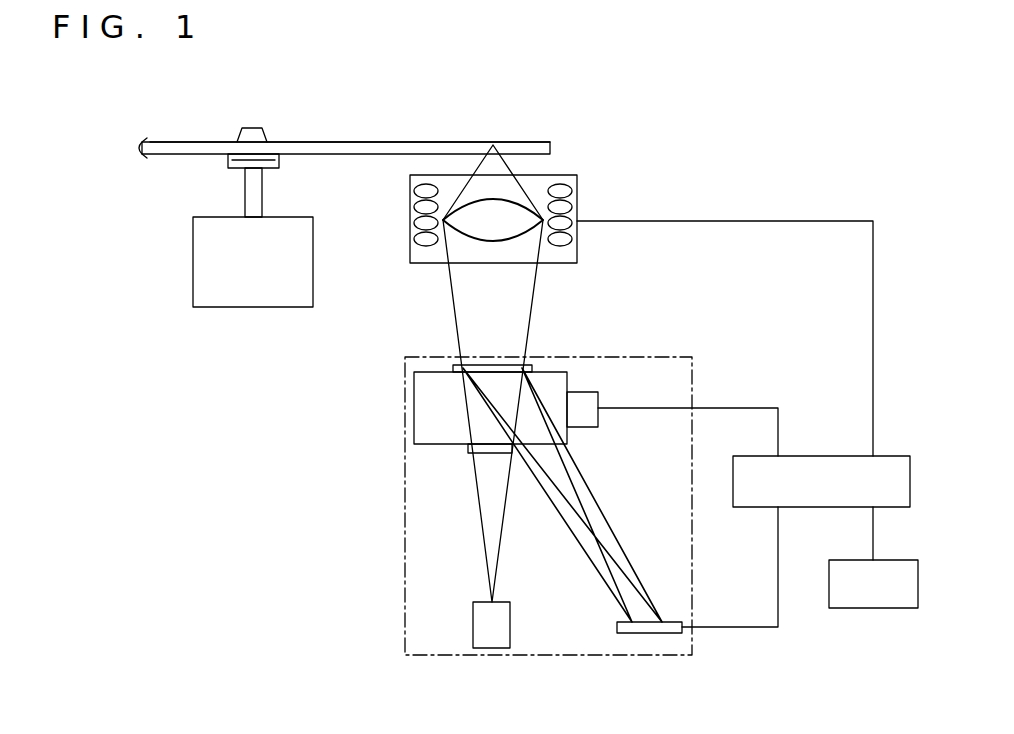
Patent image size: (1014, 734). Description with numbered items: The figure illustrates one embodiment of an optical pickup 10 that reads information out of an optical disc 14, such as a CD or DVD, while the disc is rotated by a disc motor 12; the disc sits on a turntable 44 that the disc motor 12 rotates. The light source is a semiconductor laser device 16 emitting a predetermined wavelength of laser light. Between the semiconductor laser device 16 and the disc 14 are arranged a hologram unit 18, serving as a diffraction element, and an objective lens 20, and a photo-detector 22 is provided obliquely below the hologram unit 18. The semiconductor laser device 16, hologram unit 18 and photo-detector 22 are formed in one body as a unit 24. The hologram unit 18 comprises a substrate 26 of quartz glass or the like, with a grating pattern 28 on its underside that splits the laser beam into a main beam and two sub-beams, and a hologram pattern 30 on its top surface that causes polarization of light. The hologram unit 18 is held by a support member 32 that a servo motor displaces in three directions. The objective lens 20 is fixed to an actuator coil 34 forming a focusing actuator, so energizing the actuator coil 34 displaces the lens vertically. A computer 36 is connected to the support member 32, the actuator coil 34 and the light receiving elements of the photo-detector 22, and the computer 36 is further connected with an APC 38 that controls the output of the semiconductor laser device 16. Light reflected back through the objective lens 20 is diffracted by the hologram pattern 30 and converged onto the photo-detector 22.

The optical pickup 10 is at (670, 163).
The disc motor 12 is at (243, 310).
The optical disc 14 is at (344, 110).
The semiconductor laser device 16 is at (490, 650).
The hologram unit 18 is at (508, 471).
The objective lens 20 is at (491, 212).
The photo-detector 22 is at (660, 635).
The unit 24 is at (404, 587).
The substrate 26 is at (427, 406).
The grating pattern 28 is at (484, 456).
The hologram pattern 30 is at (500, 360).
The support member 32 is at (590, 392).
The actuator coil 34 is at (579, 197).
The computer 36 is at (749, 510).
The APC 38 is at (873, 610).
The turntable 44 is at (228, 162).